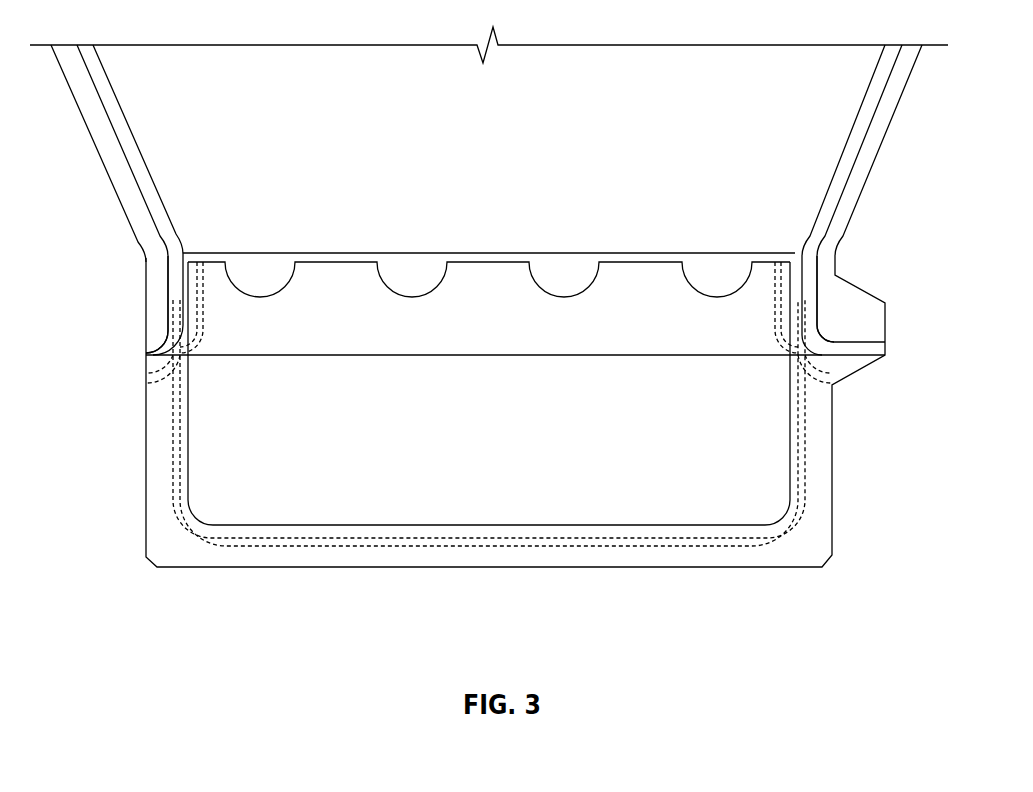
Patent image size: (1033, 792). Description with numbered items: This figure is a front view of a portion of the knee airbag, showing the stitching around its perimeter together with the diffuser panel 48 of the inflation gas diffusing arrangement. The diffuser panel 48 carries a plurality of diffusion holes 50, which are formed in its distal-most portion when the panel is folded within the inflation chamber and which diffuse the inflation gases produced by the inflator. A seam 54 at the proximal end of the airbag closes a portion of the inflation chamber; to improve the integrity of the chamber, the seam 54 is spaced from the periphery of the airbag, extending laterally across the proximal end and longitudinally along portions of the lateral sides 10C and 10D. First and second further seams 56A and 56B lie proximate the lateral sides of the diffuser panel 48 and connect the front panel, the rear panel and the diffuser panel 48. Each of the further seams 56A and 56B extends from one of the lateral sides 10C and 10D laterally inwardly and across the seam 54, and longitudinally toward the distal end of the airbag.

The lateral side 10C is at (143, 408).
The lateral side 10D is at (833, 433).
The diffuser panel 48 is at (743, 442).
The diffusion holes 50 is at (257, 293).
The seam 54 is at (248, 547).
The first further seam 56A is at (193, 290).
The second further seam 56B is at (788, 300).